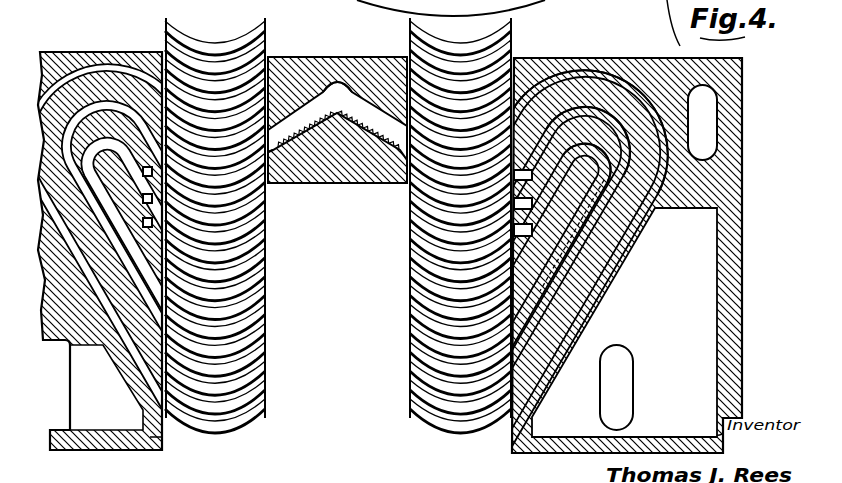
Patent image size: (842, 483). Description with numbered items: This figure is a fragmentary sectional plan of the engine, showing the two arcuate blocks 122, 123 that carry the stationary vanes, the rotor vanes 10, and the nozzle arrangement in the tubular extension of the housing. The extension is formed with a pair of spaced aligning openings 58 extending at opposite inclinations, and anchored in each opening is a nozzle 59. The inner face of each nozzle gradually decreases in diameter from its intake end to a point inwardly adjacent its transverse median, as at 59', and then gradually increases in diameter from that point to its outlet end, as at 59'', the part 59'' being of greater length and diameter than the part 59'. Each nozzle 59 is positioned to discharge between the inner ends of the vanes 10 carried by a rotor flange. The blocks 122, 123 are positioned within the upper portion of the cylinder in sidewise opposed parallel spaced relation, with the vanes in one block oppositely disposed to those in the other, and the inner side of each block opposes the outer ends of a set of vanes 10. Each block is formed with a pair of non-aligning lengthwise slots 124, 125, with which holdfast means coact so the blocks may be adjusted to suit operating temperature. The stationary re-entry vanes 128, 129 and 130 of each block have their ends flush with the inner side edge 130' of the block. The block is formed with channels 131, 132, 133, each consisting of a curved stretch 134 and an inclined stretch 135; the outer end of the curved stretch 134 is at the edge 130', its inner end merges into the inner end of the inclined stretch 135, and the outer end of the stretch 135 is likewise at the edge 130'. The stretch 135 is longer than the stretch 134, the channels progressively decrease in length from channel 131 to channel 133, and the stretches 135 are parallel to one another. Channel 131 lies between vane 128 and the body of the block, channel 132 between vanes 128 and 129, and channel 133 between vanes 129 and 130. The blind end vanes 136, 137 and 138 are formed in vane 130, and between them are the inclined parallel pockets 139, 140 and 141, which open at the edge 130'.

The vanes 10 is at (211, 49).
The aligning openings 58 is at (306, 100).
The nozzle 59 is at (354, 68).
The decreasing-diameter part of nozzle inner face 59' is at (338, 165).
The increasing-diameter part of nozzle inner face 59'' is at (292, 185).
The block 122 is at (347, 246).
The block 123 is at (584, 247).
The slot 124 is at (707, 118).
The slot 125 is at (623, 372).
The re-entry vane 128 is at (91, 83).
The re-entry vane 129 is at (74, 128).
The re-entry vane 130 is at (375, 256).
The inner side edge 130' is at (342, 451).
The channel 131 is at (581, 73).
The channel 132 is at (553, 110).
The channel 133 is at (540, 145).
The curved stretch 134 is at (656, 211).
The inclined stretch 135 is at (575, 245).
The blind end vane 136 is at (146, 170).
The blind end vane 137 is at (146, 197).
The blind end vane 138 is at (146, 222).
The inclined pocket 139 is at (512, 214).
The inclined pocket 140 is at (512, 222).
The inclined pocket 141 is at (512, 234).